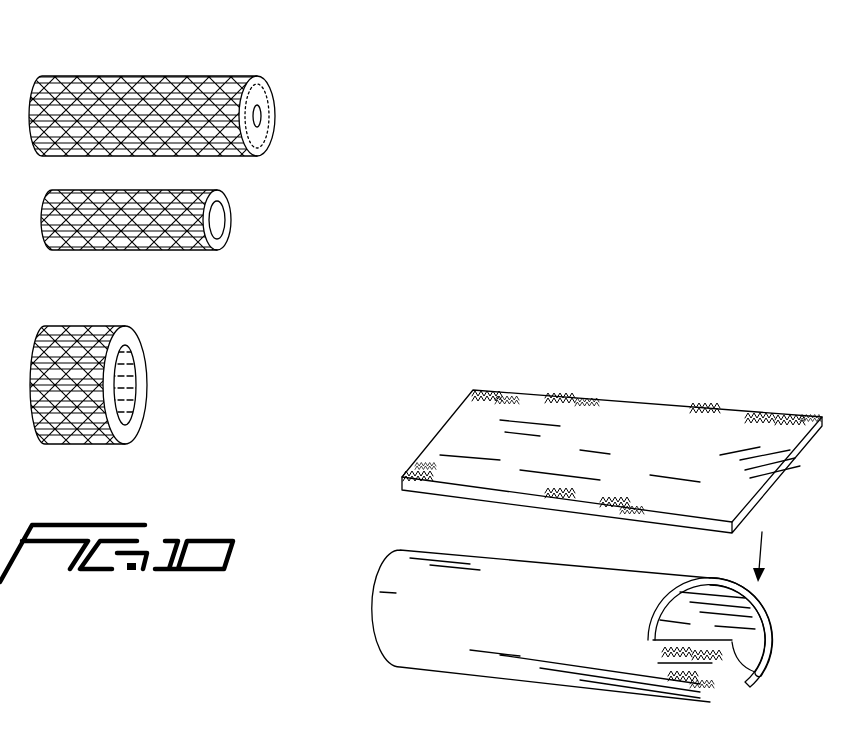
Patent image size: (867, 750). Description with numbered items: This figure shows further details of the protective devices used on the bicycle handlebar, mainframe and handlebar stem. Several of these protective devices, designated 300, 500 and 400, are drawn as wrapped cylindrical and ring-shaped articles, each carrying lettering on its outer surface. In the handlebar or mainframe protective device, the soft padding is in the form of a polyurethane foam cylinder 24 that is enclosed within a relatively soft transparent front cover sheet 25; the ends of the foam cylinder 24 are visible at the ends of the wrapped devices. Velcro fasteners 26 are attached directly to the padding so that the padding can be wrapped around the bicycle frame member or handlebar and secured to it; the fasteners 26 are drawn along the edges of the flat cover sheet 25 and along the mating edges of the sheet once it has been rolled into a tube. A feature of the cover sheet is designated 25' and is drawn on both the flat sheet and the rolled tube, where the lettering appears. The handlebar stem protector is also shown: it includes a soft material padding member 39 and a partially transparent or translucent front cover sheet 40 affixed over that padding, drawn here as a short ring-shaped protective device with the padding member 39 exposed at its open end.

The front cover sheet 25 is at (421, 379).
The polyurethane foam cylinder 24 is at (274, 101).
The cylindrical grip 300 is at (240, 78).
The cylindrical grip 500 is at (217, 191).
The ring grip 400 is at (126, 406).
The soft material padding member 39 is at (138, 407).
The front cover sheet 40 is at (77, 443).
The Velcro fasteners 26 is at (420, 457).
The embossed lettering 25' is at (590, 545).